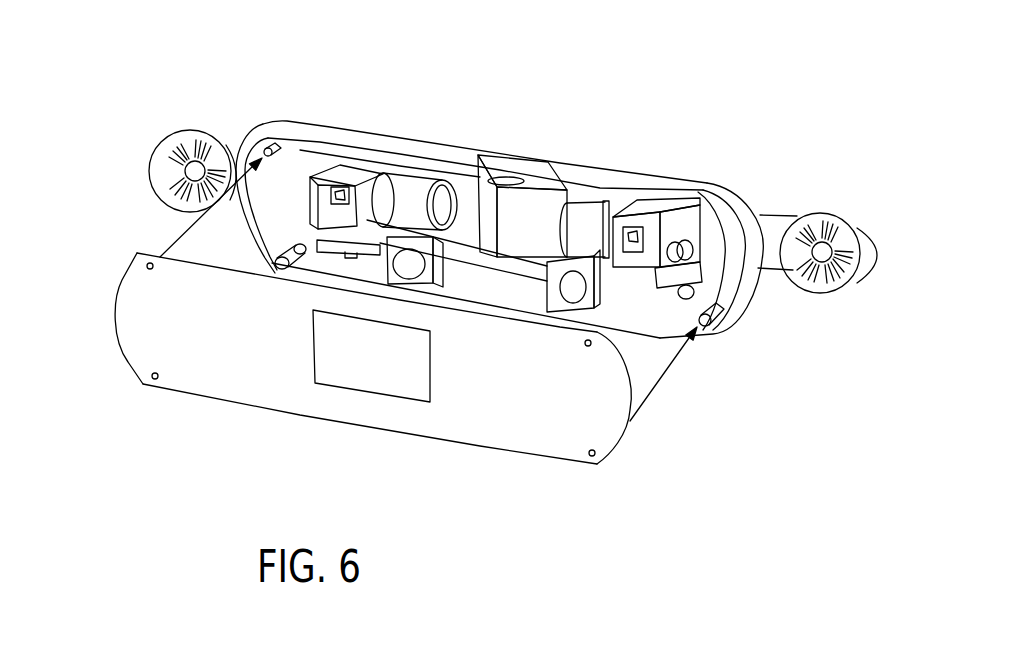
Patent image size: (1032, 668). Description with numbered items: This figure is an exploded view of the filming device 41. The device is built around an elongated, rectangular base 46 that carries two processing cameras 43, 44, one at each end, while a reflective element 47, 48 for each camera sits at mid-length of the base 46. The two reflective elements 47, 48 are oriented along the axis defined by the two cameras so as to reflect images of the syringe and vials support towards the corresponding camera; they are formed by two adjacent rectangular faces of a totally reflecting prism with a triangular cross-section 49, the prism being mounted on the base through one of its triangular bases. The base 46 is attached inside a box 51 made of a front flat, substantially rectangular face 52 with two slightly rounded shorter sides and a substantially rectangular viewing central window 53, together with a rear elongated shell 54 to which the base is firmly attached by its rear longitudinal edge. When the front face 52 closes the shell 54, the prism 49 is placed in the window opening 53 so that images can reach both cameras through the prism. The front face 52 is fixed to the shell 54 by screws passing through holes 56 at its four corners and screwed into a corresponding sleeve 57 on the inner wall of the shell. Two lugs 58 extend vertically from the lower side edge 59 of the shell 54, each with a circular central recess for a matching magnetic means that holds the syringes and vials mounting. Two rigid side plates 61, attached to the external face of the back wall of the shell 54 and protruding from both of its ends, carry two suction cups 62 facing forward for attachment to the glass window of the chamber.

The filming device 41 is at (801, 173).
The processing camera 43 is at (351, 164).
The processing camera 44 is at (660, 208).
The elongated rectangular base 46 is at (710, 284).
The reflective element 47 is at (487, 190).
The reflective element 48 is at (533, 205).
The totally reflecting prism with triangular cross-section 49 is at (568, 176).
The box 51 is at (279, 109).
The front face 52 is at (479, 418).
The viewing central window 53 is at (358, 392).
The rear elongated shell 54 is at (741, 171).
The holes 56 is at (594, 457).
The sleeve 57 is at (278, 260).
The lugs 58 is at (412, 268).
The lower side edge 59 is at (663, 327).
The rigid side plates 61 is at (860, 230).
The suction cups 62 is at (165, 152).